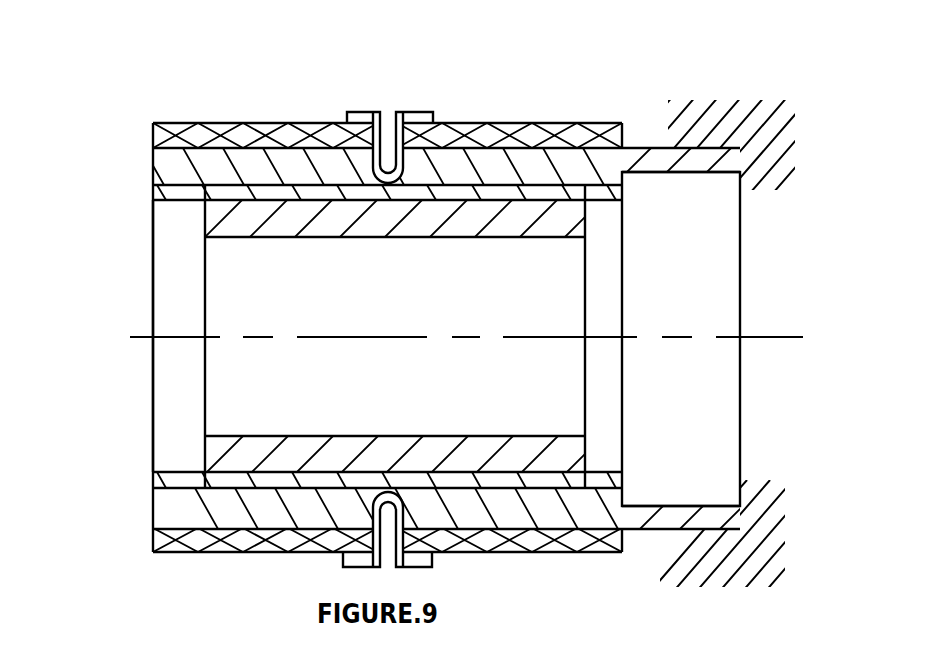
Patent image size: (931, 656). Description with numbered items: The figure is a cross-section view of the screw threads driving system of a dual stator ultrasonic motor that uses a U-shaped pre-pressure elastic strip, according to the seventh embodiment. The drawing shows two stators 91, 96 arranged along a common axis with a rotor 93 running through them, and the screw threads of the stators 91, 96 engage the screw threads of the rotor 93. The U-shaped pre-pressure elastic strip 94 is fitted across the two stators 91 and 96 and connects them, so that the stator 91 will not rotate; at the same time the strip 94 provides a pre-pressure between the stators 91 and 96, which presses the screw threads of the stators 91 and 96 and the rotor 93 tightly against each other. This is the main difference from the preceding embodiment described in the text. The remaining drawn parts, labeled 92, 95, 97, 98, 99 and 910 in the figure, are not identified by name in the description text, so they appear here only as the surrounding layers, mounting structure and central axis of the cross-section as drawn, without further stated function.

The stator 91 is at (163, 178).
The outer hatched body (left) 92 is at (200, 128).
The rotor 93 is at (283, 210).
The U-shaped pre-pressure elastic strip 94 is at (365, 118).
The crosshatched outer layer 95 is at (465, 133).
The stator 96 is at (535, 168).
The wall hatching 97 is at (650, 160).
The mounting block 98 is at (722, 130).
The left flange 99 is at (178, 418).
The bore / axis 910 is at (220, 318).